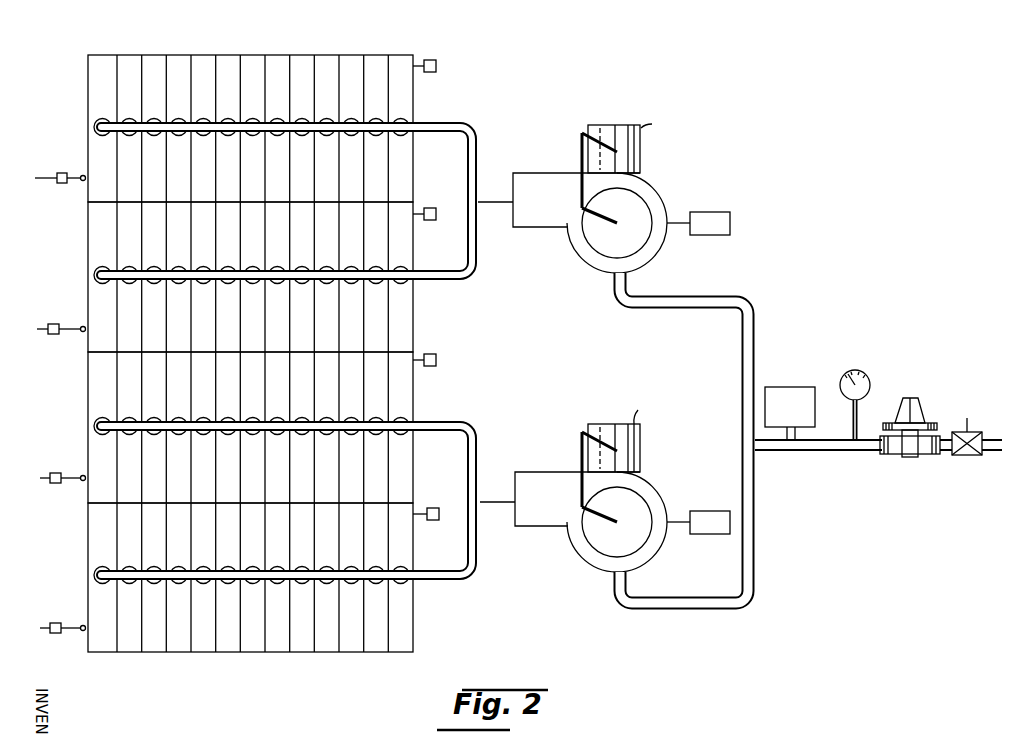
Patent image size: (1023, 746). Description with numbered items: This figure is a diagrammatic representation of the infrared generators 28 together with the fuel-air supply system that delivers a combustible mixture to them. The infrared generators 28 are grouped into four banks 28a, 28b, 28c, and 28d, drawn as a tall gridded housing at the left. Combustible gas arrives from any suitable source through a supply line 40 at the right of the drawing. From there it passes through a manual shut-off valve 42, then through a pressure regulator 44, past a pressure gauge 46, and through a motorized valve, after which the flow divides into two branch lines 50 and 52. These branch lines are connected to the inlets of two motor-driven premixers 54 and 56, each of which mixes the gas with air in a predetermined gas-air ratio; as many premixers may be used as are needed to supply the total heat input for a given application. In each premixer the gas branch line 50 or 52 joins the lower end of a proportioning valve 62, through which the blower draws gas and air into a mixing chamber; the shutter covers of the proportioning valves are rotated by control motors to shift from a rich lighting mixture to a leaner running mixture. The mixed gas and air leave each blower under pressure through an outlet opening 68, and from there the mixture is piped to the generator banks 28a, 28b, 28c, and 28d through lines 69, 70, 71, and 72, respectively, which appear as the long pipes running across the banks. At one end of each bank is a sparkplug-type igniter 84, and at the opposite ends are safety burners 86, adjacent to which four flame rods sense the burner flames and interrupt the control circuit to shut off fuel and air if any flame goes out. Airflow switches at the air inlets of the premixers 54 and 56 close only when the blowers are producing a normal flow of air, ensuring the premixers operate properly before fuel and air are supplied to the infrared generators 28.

The infrared generators 28 is at (313, 248).
The bank of infrared generators 28a is at (262, 42).
The bank of infrared generators 28b is at (88, 240).
The bank of infrared generators 28c is at (88, 390).
The bank of infrared generators 28d is at (178, 652).
The supply line 40 is at (993, 453).
The manual shut-off valve 42 is at (967, 418).
The pressure regulator 44 is at (912, 398).
The pressure gauge 46 is at (854, 370).
The branch line 50 is at (755, 333).
The branch line 52 is at (755, 525).
The motor-driven premixer 54 is at (662, 159).
The motor-driven premixer 56 is at (672, 481).
The proportioning valve 62 is at (640, 238).
The outlet opening 68 is at (545, 173).
The line 69 is at (440, 122).
The line 70 is at (430, 270).
The line 71 is at (433, 420).
The line 72 is at (430, 568).
The sparkplug-type igniter 84 is at (431, 60).
The safety burner 86 is at (83, 175).